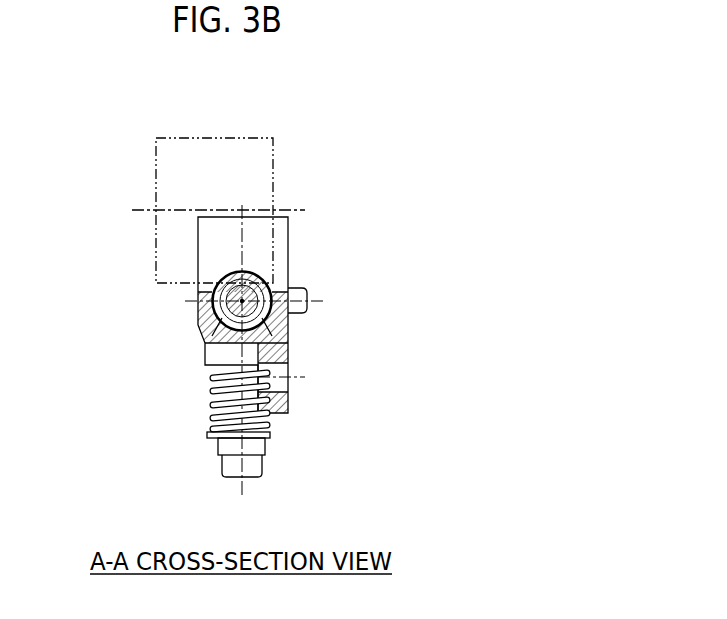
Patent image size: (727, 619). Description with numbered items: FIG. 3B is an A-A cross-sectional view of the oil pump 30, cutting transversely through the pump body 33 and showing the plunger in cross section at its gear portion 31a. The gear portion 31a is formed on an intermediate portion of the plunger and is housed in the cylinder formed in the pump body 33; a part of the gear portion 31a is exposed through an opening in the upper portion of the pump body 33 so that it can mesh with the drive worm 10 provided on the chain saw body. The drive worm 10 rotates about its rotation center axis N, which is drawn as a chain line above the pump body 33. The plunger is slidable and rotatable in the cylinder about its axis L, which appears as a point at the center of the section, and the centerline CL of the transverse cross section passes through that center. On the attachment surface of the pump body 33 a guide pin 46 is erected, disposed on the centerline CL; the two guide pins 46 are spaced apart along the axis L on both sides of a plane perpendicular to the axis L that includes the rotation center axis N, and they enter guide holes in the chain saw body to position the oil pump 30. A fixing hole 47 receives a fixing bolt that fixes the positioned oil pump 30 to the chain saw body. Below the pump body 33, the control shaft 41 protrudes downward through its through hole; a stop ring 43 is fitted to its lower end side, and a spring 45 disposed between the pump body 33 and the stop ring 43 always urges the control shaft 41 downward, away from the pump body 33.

The drive worm 10 is at (192, 138).
The rotation center axis of the drive worm N is at (145, 210).
The oil pump 30 is at (288, 338).
The gear portion 31a is at (255, 274).
The pump body 33 is at (200, 310).
The axis of the plunger L is at (198, 318).
The guide pin 46 is at (290, 292).
The centerline of a transverse cross section of the plunger CL is at (315, 303).
The fixing hole 47 is at (290, 392).
The spring 45 is at (209, 398).
The stop ring 43 is at (268, 438).
The control shaft 41 is at (216, 445).